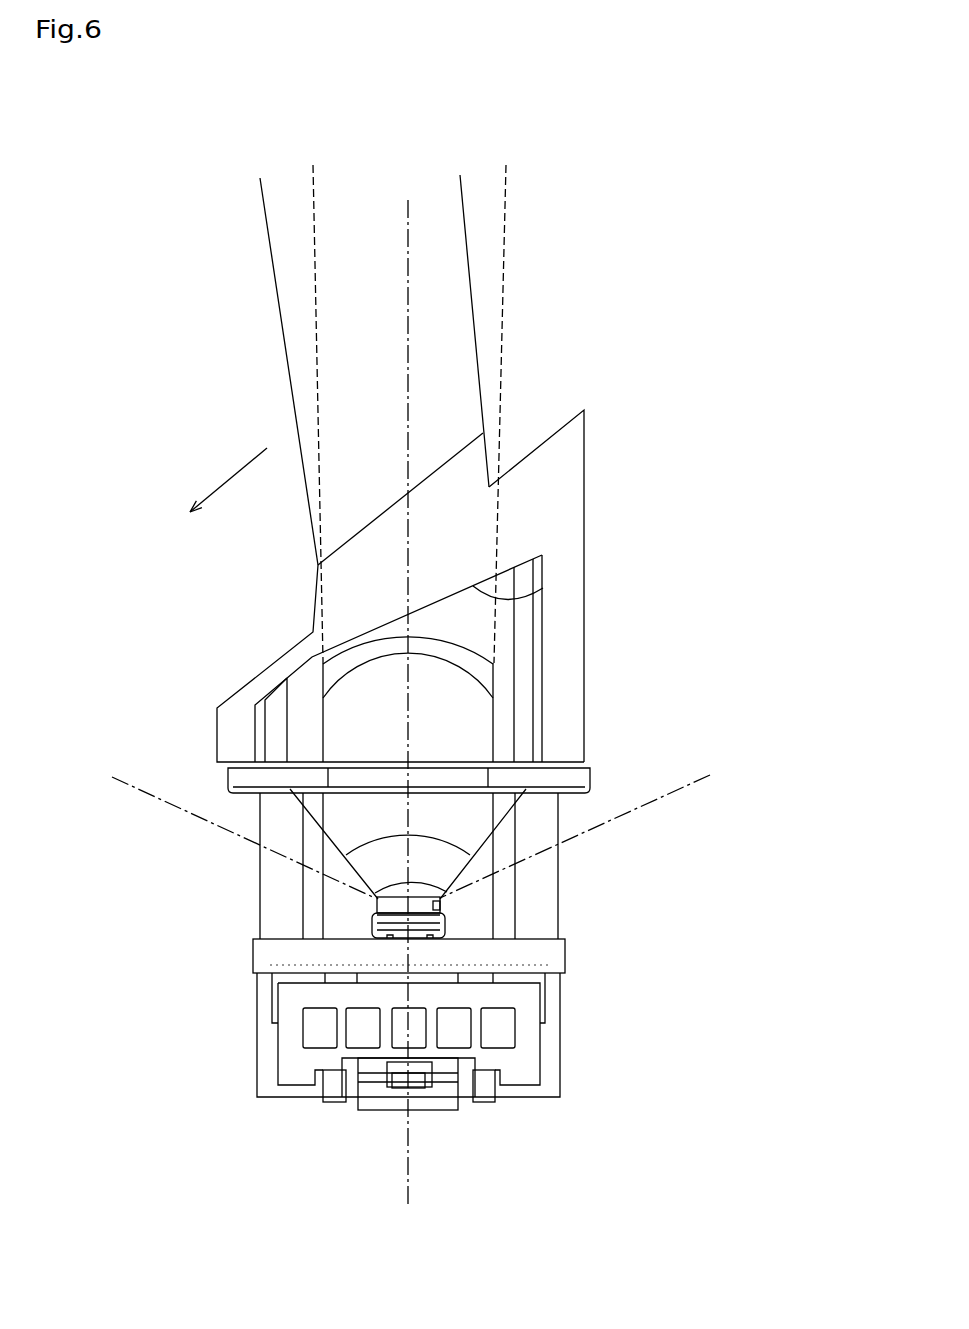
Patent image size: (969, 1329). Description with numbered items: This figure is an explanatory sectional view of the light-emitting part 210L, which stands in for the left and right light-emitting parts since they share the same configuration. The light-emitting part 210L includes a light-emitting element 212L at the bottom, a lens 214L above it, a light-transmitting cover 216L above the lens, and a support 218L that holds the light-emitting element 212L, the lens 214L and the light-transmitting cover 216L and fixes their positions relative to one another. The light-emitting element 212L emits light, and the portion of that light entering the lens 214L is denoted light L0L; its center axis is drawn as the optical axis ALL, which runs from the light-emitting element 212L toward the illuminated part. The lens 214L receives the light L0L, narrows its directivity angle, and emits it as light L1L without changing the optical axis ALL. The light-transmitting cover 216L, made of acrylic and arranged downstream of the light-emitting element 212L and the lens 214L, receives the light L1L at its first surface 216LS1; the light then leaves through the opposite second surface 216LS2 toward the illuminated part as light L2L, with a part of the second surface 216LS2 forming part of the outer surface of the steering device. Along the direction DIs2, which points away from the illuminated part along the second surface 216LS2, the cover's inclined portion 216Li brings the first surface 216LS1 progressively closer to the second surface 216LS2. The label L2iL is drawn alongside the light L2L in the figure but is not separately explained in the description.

The light-emitting part 210L is at (512, 134).
The light-emitting element 212L is at (440, 908).
The lens 214L is at (500, 686).
The light-transmitting cover 216L is at (476, 538).
The inclined portion 216Li is at (473, 530).
The first surface 216LS1 is at (540, 586).
The second surface 216LS2 is at (446, 463).
The support 218L is at (280, 913).
The optical axis ALL is at (408, 1163).
The light L1L is at (487, 235).
The second light ray (incident) L2iL is at (199, 412).
The light L2L is at (318, 412).
The light L0L is at (357, 818).
The direction Dls2 DIs2 is at (229, 478).